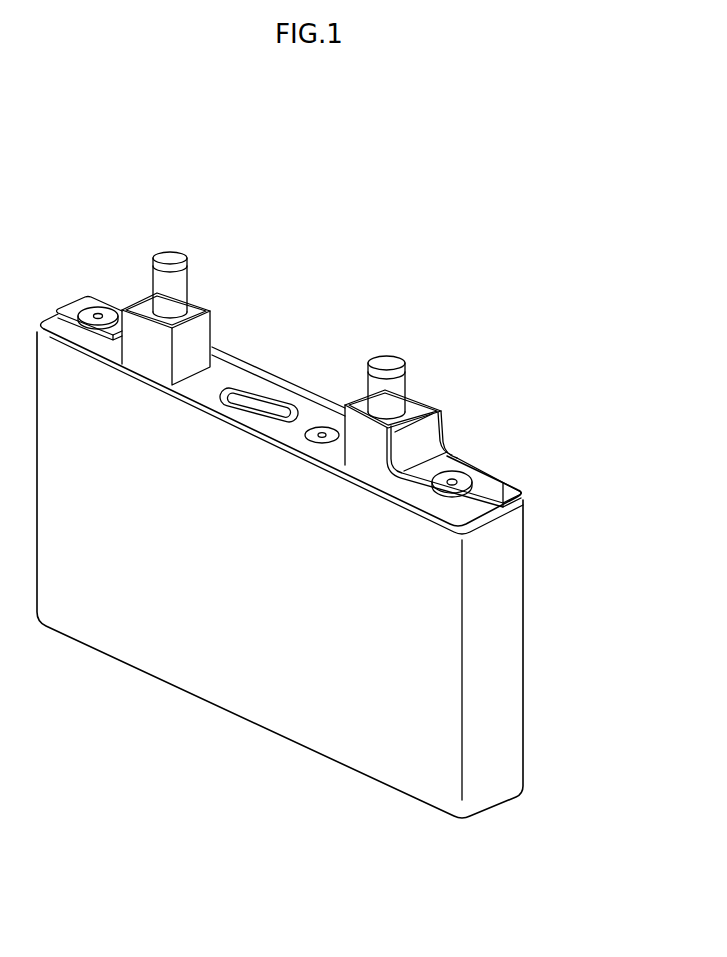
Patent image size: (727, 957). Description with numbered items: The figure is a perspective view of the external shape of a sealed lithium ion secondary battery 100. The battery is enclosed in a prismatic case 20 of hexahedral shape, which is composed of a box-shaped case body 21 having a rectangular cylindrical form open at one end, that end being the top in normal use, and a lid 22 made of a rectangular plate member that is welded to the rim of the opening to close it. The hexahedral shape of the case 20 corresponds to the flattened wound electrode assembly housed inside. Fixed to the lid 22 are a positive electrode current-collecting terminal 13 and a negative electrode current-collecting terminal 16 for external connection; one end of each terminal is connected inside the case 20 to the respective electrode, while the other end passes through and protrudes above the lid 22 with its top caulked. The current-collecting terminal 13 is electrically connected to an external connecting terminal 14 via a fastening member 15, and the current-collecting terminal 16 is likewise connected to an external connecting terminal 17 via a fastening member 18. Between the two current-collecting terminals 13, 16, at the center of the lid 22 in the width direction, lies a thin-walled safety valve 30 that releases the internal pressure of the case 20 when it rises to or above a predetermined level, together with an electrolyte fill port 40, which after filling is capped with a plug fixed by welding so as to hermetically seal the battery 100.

The lithium ion secondary battery 100 is at (587, 254).
The case 20 is at (523, 673).
The case body 21 is at (500, 612).
The lid 22 is at (225, 377).
The safety valve 30 is at (262, 402).
The electrolyte fill port 40 is at (322, 432).
The negative electrode current-collecting terminal 16 is at (93, 308).
The external connecting terminal 17 is at (197, 307).
The fastening member 18 is at (178, 285).
The positive electrode current-collecting terminal 13 is at (463, 480).
The external connecting terminal 14 is at (447, 465).
The fastening member 15 is at (393, 388).